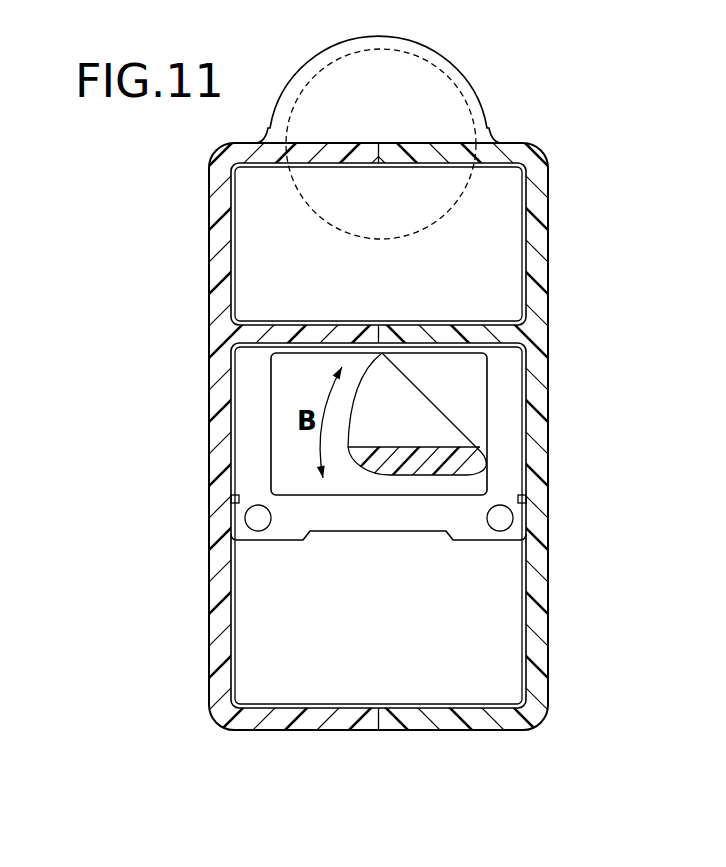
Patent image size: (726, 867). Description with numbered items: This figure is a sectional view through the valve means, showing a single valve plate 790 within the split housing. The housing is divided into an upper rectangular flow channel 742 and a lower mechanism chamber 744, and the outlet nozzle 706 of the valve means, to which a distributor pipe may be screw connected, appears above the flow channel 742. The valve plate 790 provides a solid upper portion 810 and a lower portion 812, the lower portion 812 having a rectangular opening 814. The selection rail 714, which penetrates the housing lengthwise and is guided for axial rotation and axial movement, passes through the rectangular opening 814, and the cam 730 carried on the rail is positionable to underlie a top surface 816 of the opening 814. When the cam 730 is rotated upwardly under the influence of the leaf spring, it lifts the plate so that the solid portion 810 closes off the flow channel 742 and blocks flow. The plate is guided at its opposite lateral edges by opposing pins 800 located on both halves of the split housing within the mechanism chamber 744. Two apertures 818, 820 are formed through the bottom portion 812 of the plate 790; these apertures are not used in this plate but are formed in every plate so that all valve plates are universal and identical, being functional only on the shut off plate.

The outlet nozzle 706 is at (400, 50).
The upper rectangular flow channel 742 is at (428, 162).
The valve plate 790 is at (483, 230).
The solid upper portion 810 is at (487, 293).
The lower portion 812 is at (507, 378).
The top surface 816 is at (300, 356).
The cam 730 is at (428, 420).
The selection rail 714 is at (473, 465).
The pin 800 is at (231, 500).
The aperture 818 is at (258, 520).
The aperture 820 is at (505, 526).
The rectangular opening 814 is at (333, 496).
The lower mechanism chamber 744 is at (490, 600).